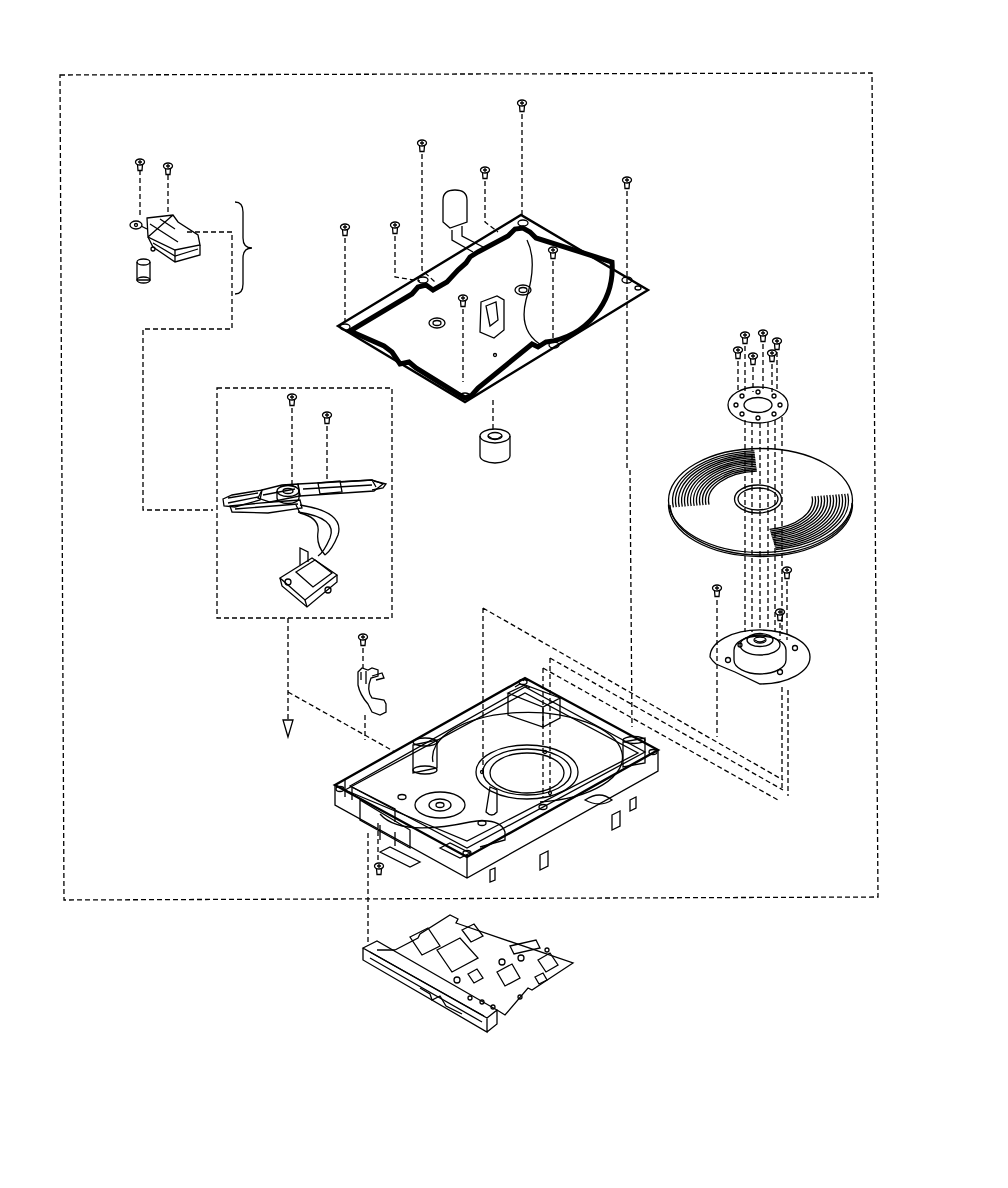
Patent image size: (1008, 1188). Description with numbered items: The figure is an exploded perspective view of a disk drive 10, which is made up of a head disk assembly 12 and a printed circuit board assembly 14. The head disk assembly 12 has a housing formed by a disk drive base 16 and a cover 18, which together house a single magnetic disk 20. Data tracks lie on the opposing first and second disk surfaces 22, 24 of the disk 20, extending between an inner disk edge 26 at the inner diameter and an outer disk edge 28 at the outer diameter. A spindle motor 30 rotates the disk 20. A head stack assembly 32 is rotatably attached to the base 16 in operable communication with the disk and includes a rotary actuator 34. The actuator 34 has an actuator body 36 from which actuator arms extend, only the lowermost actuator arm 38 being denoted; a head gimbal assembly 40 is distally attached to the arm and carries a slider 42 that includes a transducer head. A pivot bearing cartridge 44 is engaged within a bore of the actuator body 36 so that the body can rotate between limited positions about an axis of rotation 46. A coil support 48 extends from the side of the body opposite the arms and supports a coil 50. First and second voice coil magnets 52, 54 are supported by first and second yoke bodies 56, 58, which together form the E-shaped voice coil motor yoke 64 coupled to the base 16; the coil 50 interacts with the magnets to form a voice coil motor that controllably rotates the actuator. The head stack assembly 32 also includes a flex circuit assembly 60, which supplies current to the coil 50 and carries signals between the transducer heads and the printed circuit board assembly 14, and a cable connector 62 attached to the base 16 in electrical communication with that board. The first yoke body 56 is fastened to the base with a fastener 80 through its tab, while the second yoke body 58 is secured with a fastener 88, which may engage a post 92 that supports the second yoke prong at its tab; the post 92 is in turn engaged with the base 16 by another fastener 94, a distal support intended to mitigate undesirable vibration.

The disk drive 10 is at (262, 52).
The head disk assembly 12 is at (211, 900).
The printed circuit board assembly 14 is at (563, 975).
The disk drive base 16 is at (542, 845).
The cover 18 is at (580, 318).
The magnetic disk 20 is at (761, 490).
The first disk surface 22 is at (815, 480).
The second disk surface 24 is at (800, 548).
The inner disk edge 26 is at (738, 505).
The outer disk edge 28 is at (712, 545).
The spindle motor 30 is at (800, 652).
The head stack assembly 32 is at (333, 388).
The rotary actuator 34 is at (299, 488).
The actuator body 36 is at (270, 487).
The actuator arm 38 is at (336, 483).
The head gimbal assembly 40 is at (363, 483).
The slider 42 is at (384, 487).
The pivot bearing cartridge 44 is at (284, 486).
The axis of rotation 46 is at (292, 648).
The coil support 48 is at (245, 514).
The coil 50 is at (228, 498).
The first voice coil magnet 52 is at (135, 242).
The second voice coil magnet 54 is at (153, 258).
The first yoke body 56 is at (185, 259).
The second yoke body 58 is at (180, 224).
The flex circuit assembly 60 is at (332, 535).
The cable connector 62 is at (336, 576).
The E-shaped voice coil motor yoke 64 is at (190, 223).
The fastener 80 is at (173, 167).
The fastener 88 is at (135, 163).
The post 92 is at (136, 269).
The fastener 94 is at (388, 872).